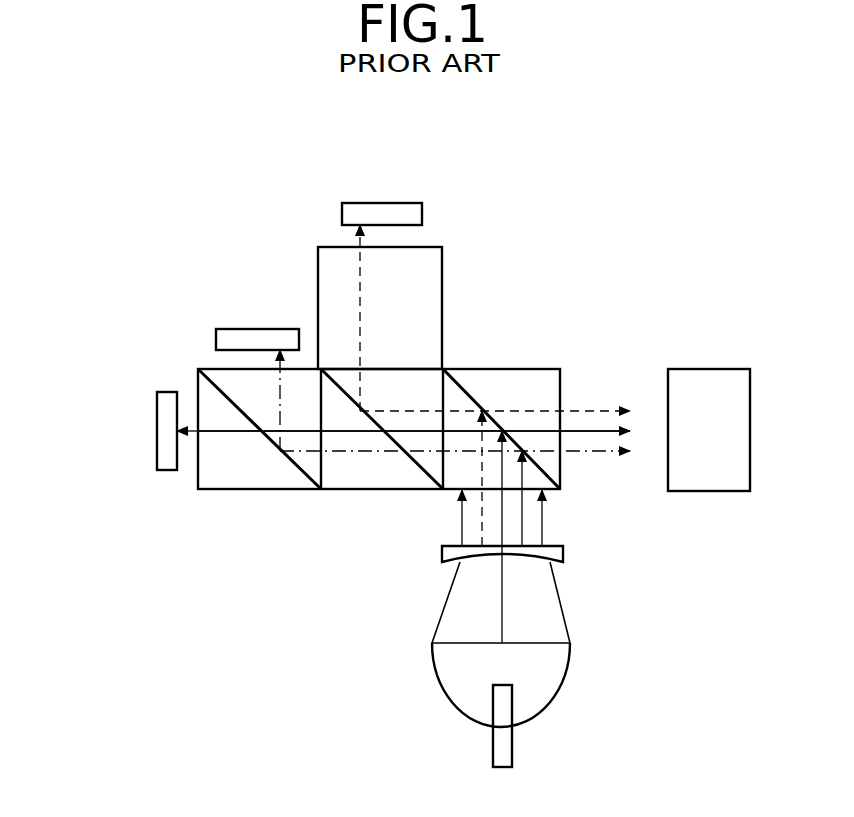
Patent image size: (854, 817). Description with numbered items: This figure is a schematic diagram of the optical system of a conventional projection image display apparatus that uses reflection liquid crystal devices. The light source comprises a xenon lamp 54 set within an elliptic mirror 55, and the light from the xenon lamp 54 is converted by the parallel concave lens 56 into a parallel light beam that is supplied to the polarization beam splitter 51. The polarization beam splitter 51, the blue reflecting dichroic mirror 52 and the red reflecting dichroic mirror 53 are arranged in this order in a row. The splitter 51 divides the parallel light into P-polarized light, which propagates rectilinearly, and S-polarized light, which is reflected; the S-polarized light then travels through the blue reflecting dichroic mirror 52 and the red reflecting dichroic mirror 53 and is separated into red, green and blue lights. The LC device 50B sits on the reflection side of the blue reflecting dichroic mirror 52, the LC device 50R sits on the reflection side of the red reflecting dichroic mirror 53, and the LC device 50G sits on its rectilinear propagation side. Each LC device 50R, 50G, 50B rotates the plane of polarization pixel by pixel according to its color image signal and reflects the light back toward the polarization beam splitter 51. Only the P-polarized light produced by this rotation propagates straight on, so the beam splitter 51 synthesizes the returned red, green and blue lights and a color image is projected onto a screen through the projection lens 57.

The reflection liquid crystal device 50B is at (393, 201).
The reflection liquid crystal device 50R is at (241, 330).
The reflection liquid crystal device 50G is at (160, 440).
The polarization beam splitter 51 is at (500, 380).
The blue reflecting dichroic mirror 52 is at (412, 467).
The red reflecting dichroic mirror 53 is at (295, 466).
The xenon lamp 54 is at (500, 705).
The elliptic mirror 55 is at (435, 680).
The parallel concave lens 56 is at (563, 553).
The projection lens 57 is at (716, 377).